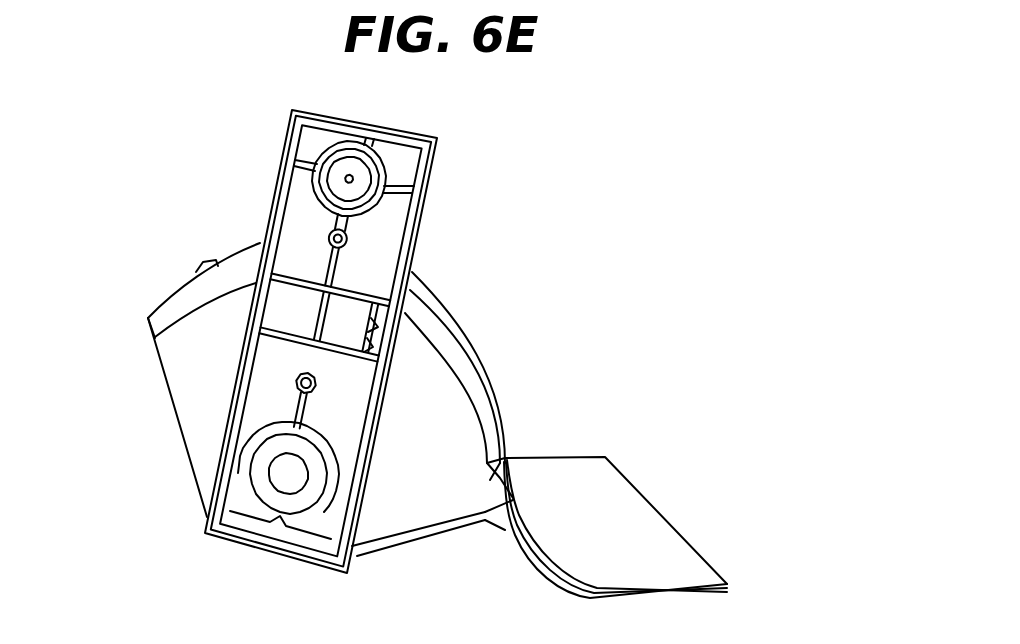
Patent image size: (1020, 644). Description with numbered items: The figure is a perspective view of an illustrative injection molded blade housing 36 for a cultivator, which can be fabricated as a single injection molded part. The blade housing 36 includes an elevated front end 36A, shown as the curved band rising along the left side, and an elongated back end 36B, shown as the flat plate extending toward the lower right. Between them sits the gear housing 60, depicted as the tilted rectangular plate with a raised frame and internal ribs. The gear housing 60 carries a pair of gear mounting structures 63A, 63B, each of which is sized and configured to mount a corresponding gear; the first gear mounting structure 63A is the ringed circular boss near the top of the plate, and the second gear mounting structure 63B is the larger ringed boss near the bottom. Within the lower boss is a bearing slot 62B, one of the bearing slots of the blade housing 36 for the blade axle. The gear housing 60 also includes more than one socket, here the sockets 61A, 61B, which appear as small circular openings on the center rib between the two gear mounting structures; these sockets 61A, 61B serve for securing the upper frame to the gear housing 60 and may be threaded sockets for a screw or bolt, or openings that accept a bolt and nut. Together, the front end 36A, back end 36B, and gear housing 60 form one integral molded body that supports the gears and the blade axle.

The blade housing 36 is at (130, 133).
The elevated front end 36A is at (148, 318).
The elongated back end 36B is at (628, 486).
The gear housing 60 is at (423, 175).
The socket 61A is at (330, 238).
The socket 61B is at (322, 383).
The bearing slot 62B is at (276, 472).
The gear mounting structure 63A is at (368, 200).
The gear mounting structure 63B is at (310, 488).